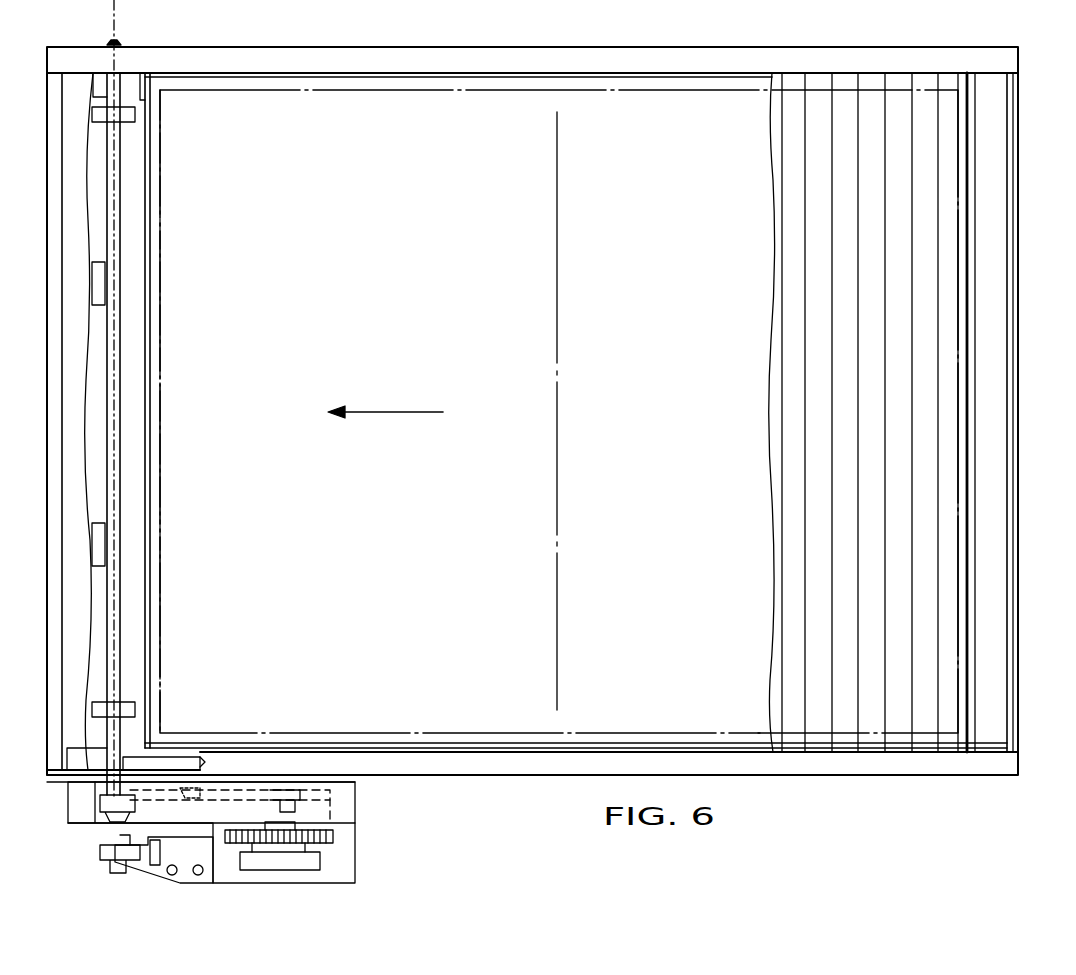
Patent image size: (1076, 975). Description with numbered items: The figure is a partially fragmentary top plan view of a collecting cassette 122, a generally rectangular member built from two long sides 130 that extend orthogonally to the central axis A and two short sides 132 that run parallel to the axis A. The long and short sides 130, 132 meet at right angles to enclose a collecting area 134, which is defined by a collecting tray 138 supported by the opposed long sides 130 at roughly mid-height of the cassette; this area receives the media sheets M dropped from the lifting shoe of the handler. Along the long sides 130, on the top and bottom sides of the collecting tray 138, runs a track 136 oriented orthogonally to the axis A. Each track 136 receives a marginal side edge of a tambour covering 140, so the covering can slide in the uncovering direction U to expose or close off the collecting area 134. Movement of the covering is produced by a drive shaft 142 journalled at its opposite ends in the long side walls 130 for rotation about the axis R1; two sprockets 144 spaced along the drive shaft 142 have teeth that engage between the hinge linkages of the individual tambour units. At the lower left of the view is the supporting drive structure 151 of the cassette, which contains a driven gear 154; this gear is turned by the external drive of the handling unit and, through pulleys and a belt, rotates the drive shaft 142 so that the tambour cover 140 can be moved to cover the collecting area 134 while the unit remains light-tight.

The collecting cassette 122 is at (732, 40).
The long sides 130 is at (396, 50).
The short sides 132 is at (46, 208).
The collecting area 134 is at (358, 480).
The track 136 is at (180, 762).
The collecting tray 138 is at (138, 514).
The tambour covering 140 is at (868, 73).
The drive shaft 142 is at (120, 268).
The sprockets 144 is at (126, 122).
The supporting drive structure 151 is at (334, 806).
The driven gear 154 is at (334, 836).
The axis of rotation of the drive shaft R1 is at (118, 22).
The central axis A is at (560, 340).
The uncovering direction U is at (408, 412).
The media sheets M is at (153, 413).